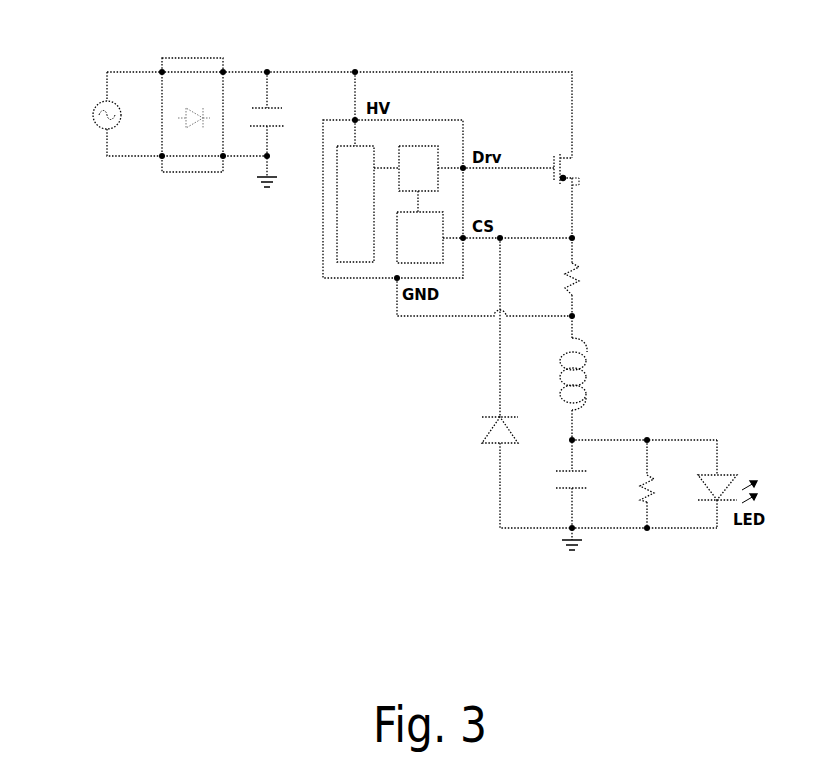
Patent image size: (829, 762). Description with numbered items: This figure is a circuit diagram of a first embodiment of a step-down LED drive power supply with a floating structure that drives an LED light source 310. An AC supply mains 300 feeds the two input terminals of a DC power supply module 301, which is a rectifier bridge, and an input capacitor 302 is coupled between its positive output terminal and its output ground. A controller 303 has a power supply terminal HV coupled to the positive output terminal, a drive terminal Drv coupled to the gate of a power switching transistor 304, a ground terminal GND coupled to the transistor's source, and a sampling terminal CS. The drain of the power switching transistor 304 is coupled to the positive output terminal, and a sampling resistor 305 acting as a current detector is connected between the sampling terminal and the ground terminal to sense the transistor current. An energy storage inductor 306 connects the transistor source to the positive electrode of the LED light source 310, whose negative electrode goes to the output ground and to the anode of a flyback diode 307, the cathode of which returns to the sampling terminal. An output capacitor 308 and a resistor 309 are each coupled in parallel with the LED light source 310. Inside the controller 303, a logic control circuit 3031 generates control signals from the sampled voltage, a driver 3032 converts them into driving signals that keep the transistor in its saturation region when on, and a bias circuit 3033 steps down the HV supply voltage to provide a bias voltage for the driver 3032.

The AC supply mains 300 is at (83, 97).
The power supply module 301 is at (188, 177).
The input capacitor 302 is at (283, 100).
The controller 303 is at (400, 153).
The logic control circuit 3031 is at (420, 237).
The driver 3032 is at (418, 168).
The bias circuit 3033 is at (355, 204).
The power switching transistor 304 is at (580, 158).
The sampling resistor 305 is at (585, 280).
The energy storage inductor 306 is at (598, 382).
The flyback diode 307 is at (482, 432).
The output capacitor 308 is at (590, 462).
The resistor 309 is at (660, 465).
The LED light source 310 is at (732, 470).